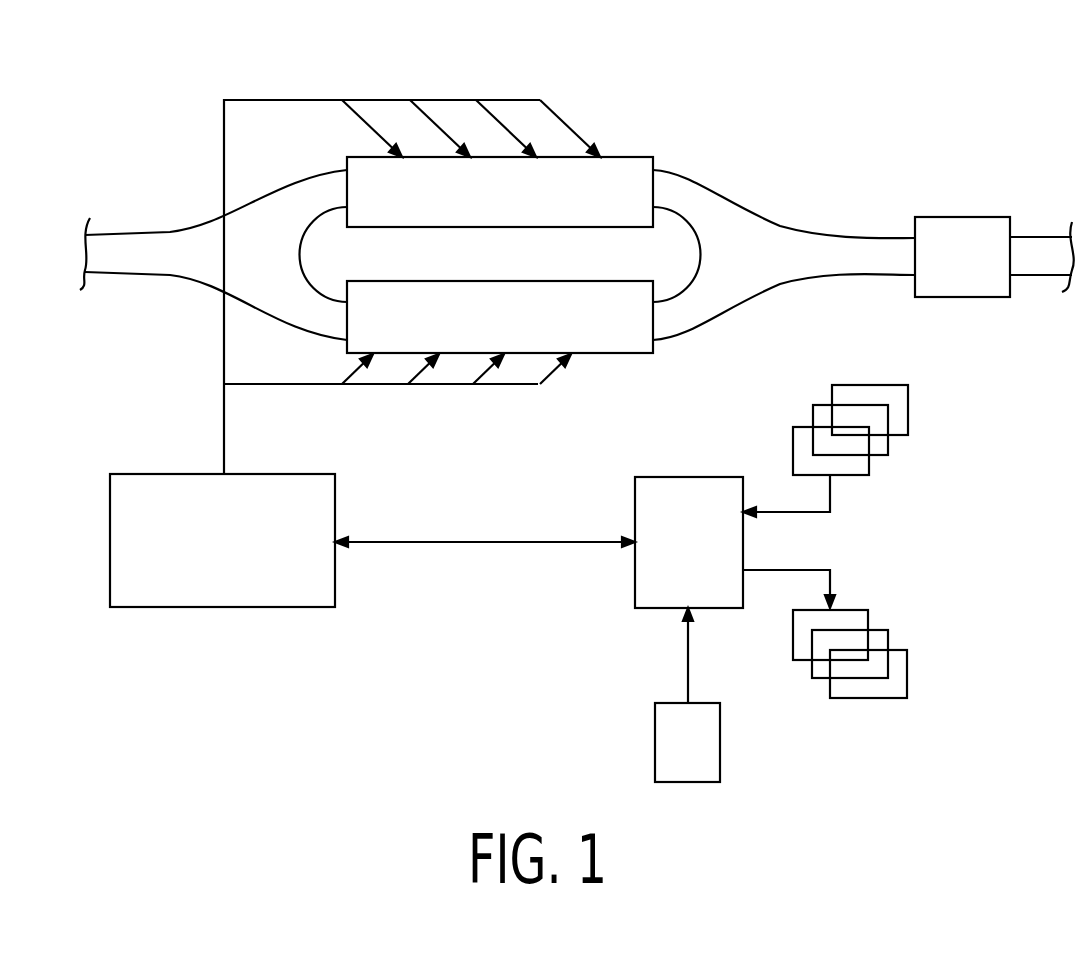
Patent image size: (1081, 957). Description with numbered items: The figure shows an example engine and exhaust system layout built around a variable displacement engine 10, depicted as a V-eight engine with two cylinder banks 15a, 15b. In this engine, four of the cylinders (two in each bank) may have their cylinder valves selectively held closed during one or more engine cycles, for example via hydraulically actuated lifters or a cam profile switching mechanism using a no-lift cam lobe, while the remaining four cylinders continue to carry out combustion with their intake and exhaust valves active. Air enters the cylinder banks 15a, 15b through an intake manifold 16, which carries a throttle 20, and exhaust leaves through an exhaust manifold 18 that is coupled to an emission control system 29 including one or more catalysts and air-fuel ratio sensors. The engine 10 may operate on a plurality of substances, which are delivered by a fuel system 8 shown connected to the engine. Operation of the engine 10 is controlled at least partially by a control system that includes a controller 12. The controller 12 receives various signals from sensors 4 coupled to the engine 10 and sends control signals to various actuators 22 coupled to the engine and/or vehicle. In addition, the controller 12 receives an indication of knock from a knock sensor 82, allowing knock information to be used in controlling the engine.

The variable displacement engine 10 is at (653, 122).
The cylinder bank 15a is at (522, 212).
The cylinder bank 15b is at (522, 330).
The intake manifold 16 is at (203, 222).
The exhaust manifold 18 is at (728, 220).
The throttle 20 is at (175, 246).
The emission control system 29 is at (963, 215).
The fuel system 8 is at (222, 607).
The controller 12 is at (657, 608).
The sensors 4 is at (908, 408).
The actuators 22 is at (908, 672).
The knock sensor 82 is at (720, 745).